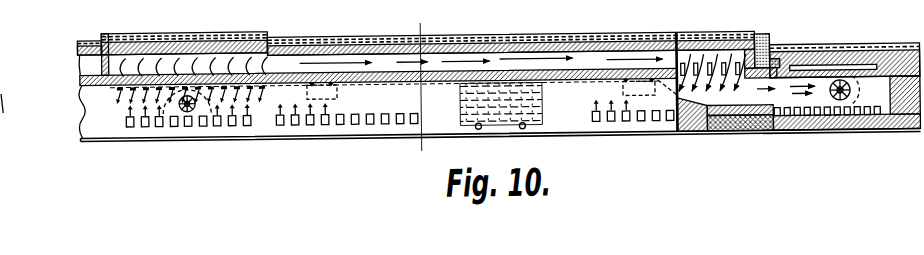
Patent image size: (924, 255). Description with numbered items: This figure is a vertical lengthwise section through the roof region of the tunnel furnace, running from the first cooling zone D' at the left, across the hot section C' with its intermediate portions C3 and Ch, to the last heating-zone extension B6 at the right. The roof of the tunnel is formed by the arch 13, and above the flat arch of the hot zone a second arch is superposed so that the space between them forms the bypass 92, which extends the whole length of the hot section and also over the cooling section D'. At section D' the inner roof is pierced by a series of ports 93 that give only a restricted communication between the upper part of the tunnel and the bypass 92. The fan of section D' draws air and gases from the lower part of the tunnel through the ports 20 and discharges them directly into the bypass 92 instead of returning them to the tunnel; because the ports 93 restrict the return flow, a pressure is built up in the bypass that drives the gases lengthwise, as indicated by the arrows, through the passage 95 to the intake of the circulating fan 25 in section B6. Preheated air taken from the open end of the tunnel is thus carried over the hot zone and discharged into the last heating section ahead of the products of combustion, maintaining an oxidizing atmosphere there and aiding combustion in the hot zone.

The ports 93 is at (133, 68).
The bypass 92 is at (183, 58).
The arch 13 is at (424, 94).
The passage 95 is at (763, 58).
The centrifugal fan 25 is at (863, 74).
The ports 20 is at (875, 122).
The lateral extension B6 is at (863, 136).
The hot section C' is at (727, 105).
The brick-lined burner section Ch is at (537, 136).
The middle burner section C3 is at (380, 136).
The first cooling zone D' is at (191, 124).